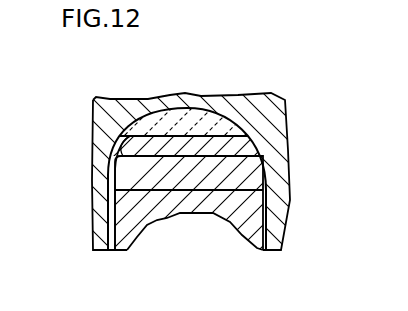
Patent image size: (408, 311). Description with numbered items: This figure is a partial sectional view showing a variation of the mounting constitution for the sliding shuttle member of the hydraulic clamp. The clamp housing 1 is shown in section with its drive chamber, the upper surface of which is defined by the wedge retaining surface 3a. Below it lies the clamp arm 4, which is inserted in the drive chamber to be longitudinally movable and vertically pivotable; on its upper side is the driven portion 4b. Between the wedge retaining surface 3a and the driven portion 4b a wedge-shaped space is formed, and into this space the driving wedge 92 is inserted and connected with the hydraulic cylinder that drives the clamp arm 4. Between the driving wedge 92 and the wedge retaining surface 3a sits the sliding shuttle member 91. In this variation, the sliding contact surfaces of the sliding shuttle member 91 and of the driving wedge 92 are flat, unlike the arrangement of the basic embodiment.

The clamp housing 1 is at (113, 110).
The wedge retaining surface 3a is at (163, 108).
The clamp arm 4 is at (187, 208).
The driven portion 4b is at (115, 152).
The sliding shuttle member 91 is at (225, 111).
The driving wedge 92 is at (235, 148).